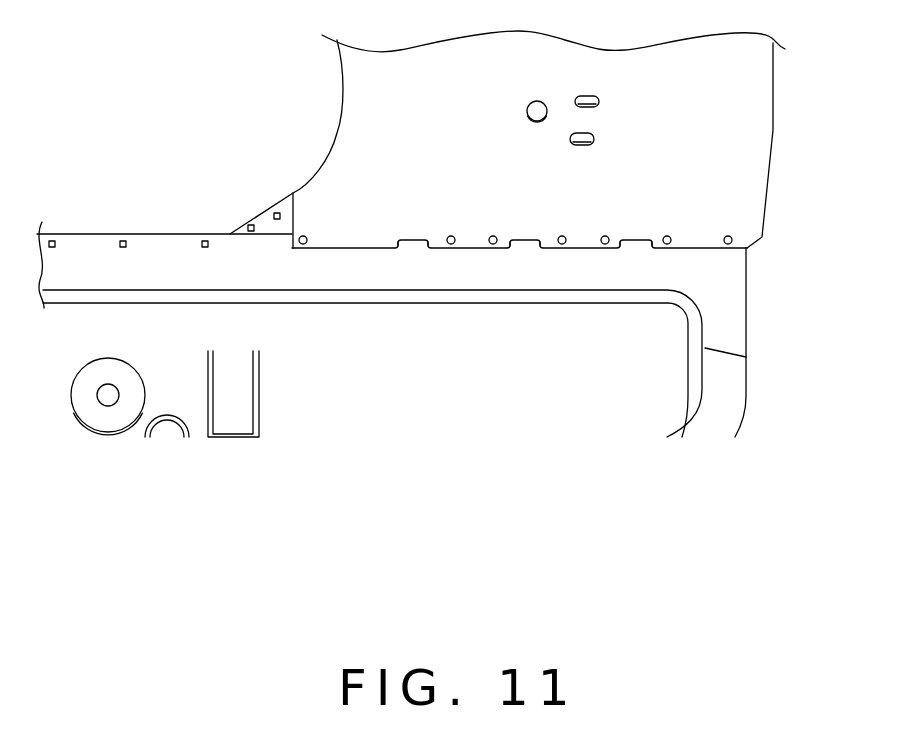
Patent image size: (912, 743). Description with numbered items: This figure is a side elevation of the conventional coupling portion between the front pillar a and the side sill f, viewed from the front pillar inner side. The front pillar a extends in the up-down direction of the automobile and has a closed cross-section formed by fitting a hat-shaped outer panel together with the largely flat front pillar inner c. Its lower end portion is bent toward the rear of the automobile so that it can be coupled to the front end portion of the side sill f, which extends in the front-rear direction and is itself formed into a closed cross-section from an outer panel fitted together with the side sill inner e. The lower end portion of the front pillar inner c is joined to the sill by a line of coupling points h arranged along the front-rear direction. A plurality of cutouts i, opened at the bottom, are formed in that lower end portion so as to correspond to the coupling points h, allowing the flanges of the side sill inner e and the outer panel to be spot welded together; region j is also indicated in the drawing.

The front pillar a is at (793, 107).
The front pillar inner c is at (753, 187).
The side sill inner e is at (733, 313).
The side sill f is at (278, 458).
The coupling points h is at (305, 236).
The cutouts i is at (400, 242).
The flat edge portion j is at (333, 237).